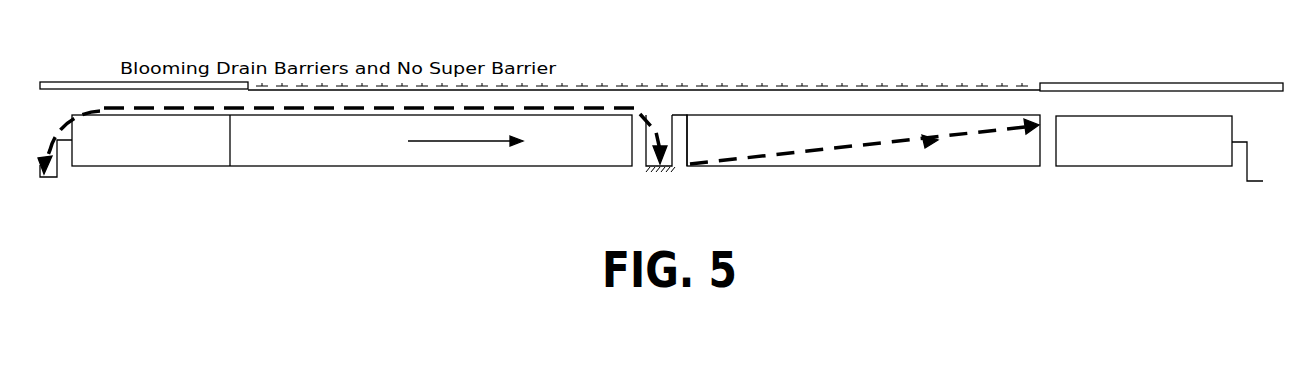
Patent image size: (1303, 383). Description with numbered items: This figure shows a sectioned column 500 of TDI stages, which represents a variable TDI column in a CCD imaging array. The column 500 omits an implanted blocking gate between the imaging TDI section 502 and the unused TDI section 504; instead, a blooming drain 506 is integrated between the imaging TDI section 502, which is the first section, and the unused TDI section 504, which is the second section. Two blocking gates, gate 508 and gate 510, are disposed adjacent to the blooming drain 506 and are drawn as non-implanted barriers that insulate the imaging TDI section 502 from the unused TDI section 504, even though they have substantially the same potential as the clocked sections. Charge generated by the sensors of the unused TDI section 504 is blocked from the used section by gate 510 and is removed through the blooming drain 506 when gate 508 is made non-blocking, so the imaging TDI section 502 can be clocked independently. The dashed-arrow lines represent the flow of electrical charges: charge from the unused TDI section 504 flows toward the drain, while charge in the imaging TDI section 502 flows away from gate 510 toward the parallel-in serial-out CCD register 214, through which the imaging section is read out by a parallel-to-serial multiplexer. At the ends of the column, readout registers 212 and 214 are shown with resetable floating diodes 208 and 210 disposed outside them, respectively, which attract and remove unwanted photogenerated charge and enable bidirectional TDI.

The column 500 is at (688, 20).
The imaging TDI section 502 is at (946, 112).
The unused TDI section 504 is at (446, 112).
The blooming drain 506 is at (658, 178).
The gate 508 is at (638, 112).
The gate 510 is at (682, 115).
The resetable floating diode 208 is at (48, 178).
The resetable floating diode 210 is at (1250, 182).
The readout register 212 is at (130, 168).
The readout register 214 is at (1158, 168).